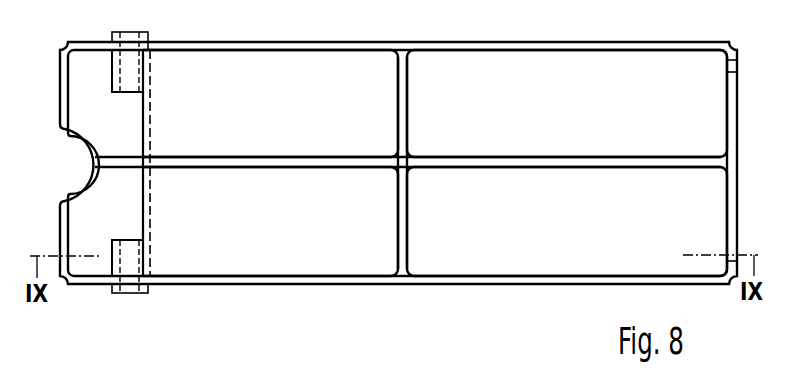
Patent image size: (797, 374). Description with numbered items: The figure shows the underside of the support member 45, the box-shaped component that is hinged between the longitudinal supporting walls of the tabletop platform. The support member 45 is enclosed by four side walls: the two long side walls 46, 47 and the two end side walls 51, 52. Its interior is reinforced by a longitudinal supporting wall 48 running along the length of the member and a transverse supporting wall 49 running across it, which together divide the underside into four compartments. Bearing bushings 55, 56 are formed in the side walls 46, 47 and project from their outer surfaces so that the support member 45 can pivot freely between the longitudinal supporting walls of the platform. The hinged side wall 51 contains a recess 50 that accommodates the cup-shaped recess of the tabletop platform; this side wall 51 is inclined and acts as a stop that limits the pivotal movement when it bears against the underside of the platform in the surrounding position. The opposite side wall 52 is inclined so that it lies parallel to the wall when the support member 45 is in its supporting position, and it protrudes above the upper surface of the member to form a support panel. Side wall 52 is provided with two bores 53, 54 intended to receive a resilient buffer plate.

The support member 45 is at (454, 286).
The side wall 46 is at (304, 285).
The side wall 47 is at (310, 25).
The longitudinal supporting wall 48 is at (283, 164).
The transverse supporting wall 49 is at (402, 112).
The recess 50 is at (88, 151).
The side wall 51 is at (63, 92).
The side wall 52 is at (737, 108).
The bore 53 is at (738, 62).
The bore 54 is at (736, 254).
The bearing bushing 55 is at (116, 262).
The bearing bushing 56 is at (117, 67).